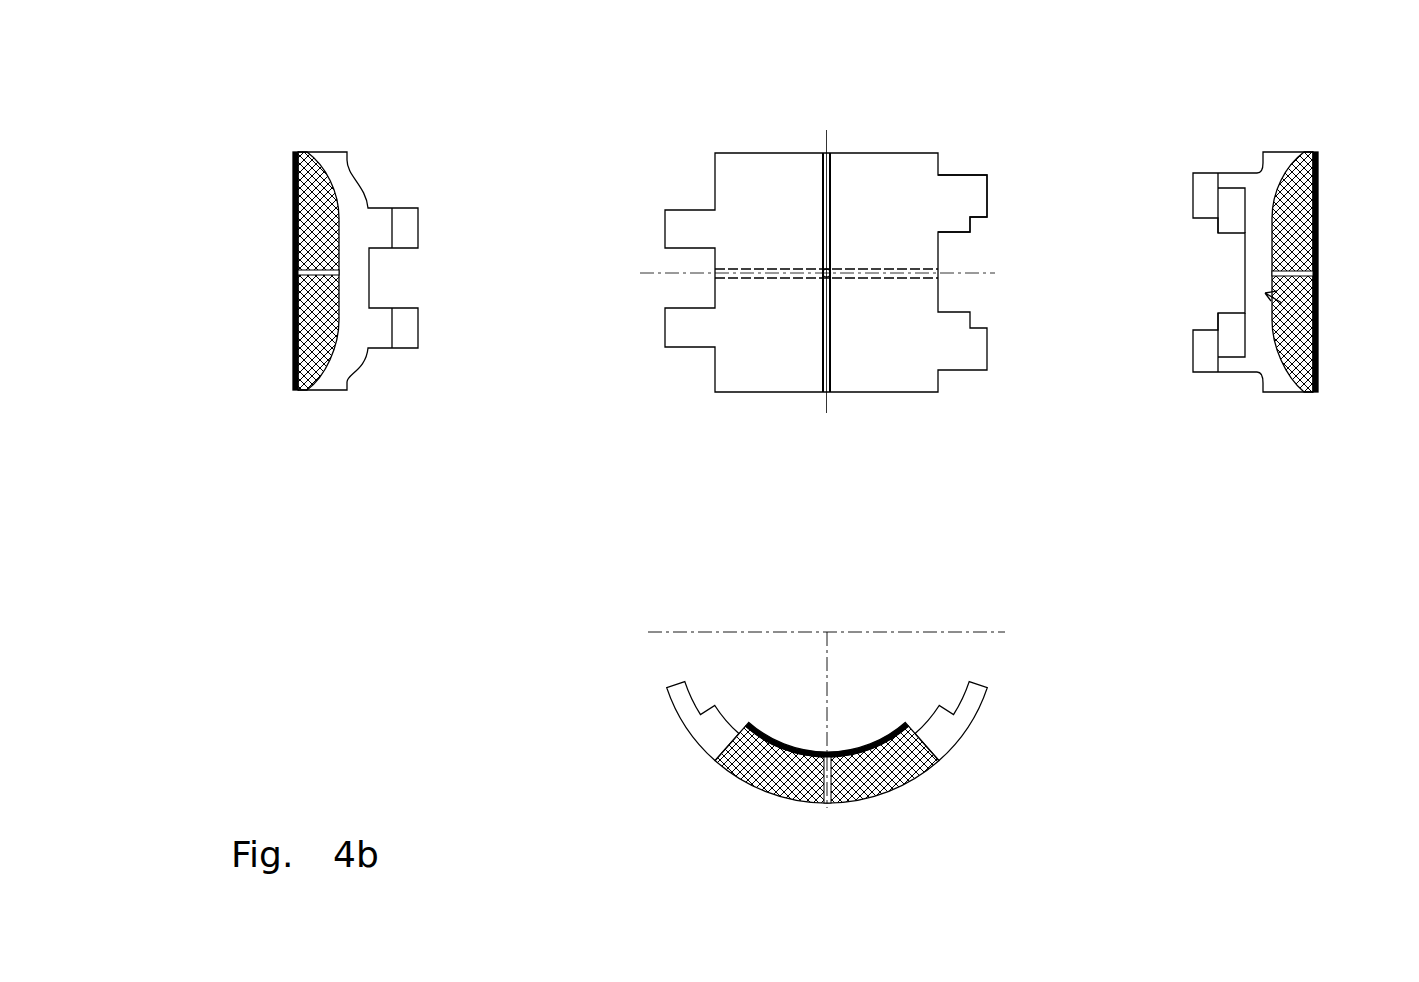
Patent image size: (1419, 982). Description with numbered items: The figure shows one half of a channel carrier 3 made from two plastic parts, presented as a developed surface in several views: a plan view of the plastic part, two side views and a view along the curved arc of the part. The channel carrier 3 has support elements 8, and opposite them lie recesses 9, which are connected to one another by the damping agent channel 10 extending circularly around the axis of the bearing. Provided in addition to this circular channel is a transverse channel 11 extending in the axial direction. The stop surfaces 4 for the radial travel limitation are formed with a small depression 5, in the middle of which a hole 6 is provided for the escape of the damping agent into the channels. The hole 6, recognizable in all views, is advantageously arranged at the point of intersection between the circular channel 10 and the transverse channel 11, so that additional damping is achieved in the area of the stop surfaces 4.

The channel carrier 3 is at (1260, 82).
The stop surfaces 4 is at (296, 187).
The depression 5 is at (295, 330).
The hole 6 is at (297, 272).
The support elements 8 is at (407, 333).
The recesses 9 is at (950, 262).
The damping agent channel 10 is at (857, 280).
The transverse channel 11 is at (820, 200).